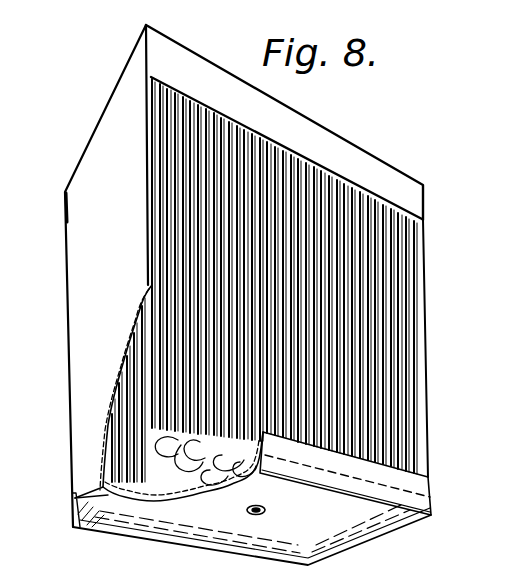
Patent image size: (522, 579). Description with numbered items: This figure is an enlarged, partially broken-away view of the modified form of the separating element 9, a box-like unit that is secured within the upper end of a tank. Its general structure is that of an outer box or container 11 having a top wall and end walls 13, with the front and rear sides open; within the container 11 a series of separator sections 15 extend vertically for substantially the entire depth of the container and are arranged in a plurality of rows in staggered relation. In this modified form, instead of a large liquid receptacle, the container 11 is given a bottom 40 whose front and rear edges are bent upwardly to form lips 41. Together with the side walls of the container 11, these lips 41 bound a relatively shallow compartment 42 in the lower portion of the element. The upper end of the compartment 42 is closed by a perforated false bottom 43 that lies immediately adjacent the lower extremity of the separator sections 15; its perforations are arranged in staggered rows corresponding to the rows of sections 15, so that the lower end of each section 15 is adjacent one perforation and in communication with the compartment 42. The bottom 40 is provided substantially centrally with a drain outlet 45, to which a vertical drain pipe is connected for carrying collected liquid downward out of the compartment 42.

The separating element 9 is at (375, 145).
The outer box or container 11 is at (87, 277).
The end walls 13 is at (85, 341).
The separator sections 15 is at (388, 388).
The bottom 40 is at (175, 540).
The lips 41 is at (410, 482).
The compartment 42 is at (432, 493).
The perforated false bottom 43 is at (128, 497).
The drain outlet 45 is at (270, 510).